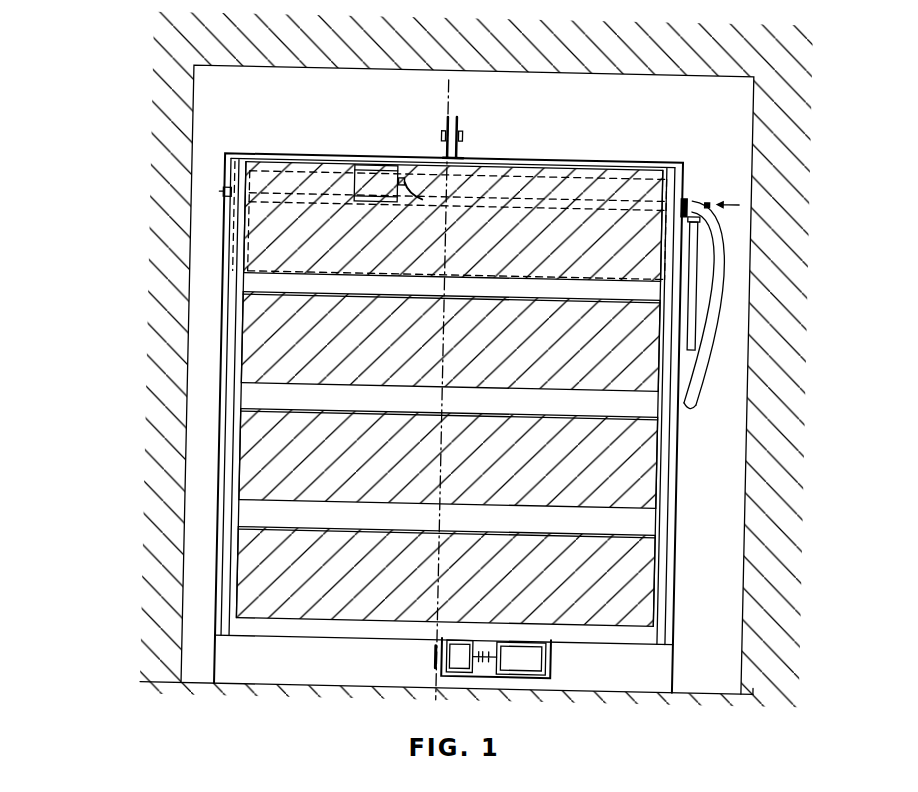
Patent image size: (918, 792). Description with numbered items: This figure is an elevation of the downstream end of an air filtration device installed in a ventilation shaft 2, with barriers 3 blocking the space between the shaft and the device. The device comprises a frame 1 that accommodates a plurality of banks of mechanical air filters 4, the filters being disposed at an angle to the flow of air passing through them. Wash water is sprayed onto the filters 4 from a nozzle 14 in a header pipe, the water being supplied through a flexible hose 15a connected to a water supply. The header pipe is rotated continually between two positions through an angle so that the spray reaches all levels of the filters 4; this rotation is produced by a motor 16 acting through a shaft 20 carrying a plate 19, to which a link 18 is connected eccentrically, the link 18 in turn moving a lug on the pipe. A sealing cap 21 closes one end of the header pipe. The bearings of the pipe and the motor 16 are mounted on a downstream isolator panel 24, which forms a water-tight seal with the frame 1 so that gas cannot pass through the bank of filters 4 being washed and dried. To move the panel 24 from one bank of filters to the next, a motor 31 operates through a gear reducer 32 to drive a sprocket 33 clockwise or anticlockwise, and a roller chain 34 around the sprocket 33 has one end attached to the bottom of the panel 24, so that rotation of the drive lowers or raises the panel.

The frame 1 is at (647, 404).
The ventilation shaft 2 is at (568, 62).
The barriers 3 is at (255, 89).
The mechanical air filters 4 is at (644, 463).
The nozzle 14 is at (619, 199).
The flexible hose 15a is at (702, 328).
The motor 16 is at (367, 178).
The link 18 is at (408, 191).
The plate 19 is at (400, 181).
The shaft 20 is at (398, 189).
The sealing cap 21 is at (220, 192).
The downstream isolator panel 24 is at (631, 218).
The motor 31 is at (536, 660).
The gear reducer 32 is at (464, 667).
The sprocket 33 is at (442, 653).
The roller chain 34 is at (444, 470).